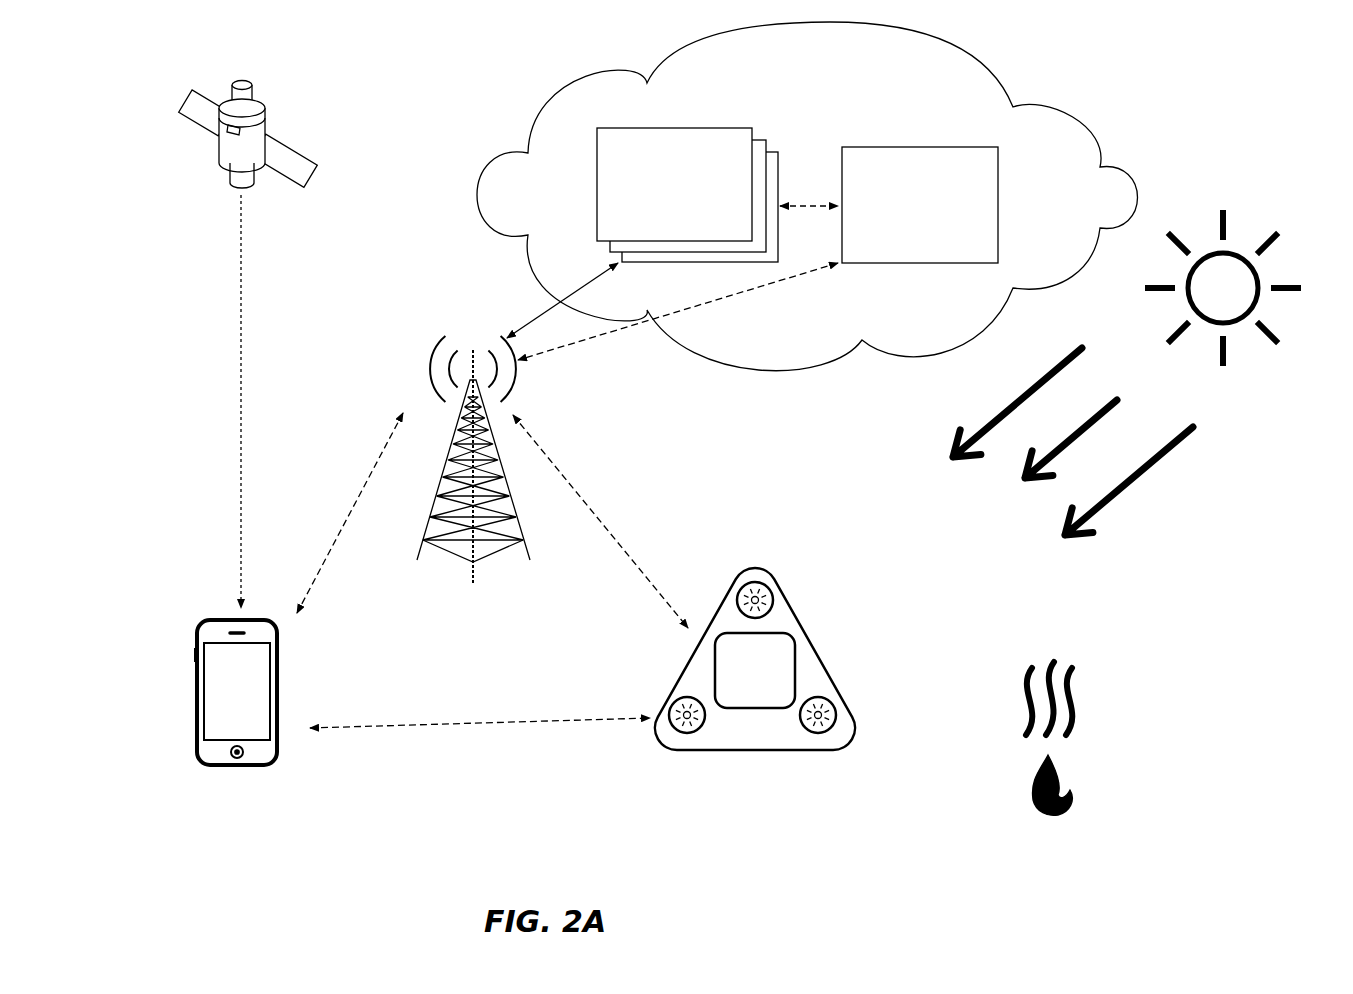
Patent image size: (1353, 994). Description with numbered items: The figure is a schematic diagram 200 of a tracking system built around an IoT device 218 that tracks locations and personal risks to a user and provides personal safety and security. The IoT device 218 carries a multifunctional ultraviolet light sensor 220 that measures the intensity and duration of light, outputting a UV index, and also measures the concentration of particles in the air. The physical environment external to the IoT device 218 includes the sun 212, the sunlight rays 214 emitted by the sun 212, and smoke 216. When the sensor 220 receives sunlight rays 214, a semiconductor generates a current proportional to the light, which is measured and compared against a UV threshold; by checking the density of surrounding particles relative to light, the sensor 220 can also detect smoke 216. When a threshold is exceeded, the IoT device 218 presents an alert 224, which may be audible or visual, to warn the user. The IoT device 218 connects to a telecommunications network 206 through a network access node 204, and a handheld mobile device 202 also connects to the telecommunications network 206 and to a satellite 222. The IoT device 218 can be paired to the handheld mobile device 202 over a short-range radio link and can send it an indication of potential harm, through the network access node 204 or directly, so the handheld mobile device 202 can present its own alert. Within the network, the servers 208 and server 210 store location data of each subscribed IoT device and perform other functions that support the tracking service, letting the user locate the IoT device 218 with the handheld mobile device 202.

The schematic diagram 200 is at (1240, 94).
The handheld mobile device 202 is at (240, 729).
The network access node 204 is at (487, 487).
The telecommunications network 206 is at (807, 196).
The servers 208 is at (687, 195).
The server 210 is at (920, 205).
The sun 212 is at (1223, 288).
The sunlight rays 214 is at (986, 515).
The smoke 216 is at (1112, 645).
The IoT device 218 is at (753, 755).
The multifunctional ultraviolet light sensor 220 is at (731, 600).
The satellite 222 is at (219, 86).
The alert 224 is at (755, 670).